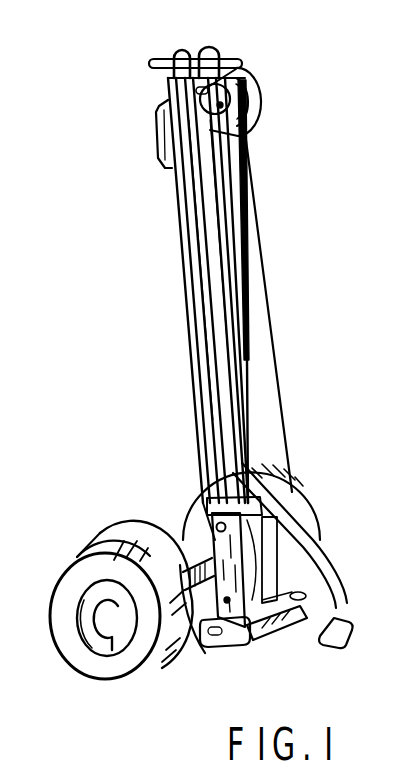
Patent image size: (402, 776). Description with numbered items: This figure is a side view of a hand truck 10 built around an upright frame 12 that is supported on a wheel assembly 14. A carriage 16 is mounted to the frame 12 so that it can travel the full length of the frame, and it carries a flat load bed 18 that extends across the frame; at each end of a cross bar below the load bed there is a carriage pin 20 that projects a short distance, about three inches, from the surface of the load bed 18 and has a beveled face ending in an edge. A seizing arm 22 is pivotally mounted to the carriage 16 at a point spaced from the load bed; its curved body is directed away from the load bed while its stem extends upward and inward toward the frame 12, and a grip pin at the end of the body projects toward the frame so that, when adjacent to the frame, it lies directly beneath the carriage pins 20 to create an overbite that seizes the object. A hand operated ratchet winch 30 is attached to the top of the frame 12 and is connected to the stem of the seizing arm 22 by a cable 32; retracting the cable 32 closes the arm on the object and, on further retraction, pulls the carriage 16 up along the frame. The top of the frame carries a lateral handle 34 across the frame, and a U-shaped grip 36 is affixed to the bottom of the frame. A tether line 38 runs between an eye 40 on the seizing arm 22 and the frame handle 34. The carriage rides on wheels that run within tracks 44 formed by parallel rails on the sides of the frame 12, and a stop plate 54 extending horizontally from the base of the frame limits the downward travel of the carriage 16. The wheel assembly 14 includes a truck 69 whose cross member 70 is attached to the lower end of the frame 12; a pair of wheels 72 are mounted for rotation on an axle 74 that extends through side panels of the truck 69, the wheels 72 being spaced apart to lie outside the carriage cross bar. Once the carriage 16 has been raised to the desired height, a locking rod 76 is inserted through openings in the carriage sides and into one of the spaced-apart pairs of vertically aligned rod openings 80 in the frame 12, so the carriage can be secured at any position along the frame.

The hand truck 10 is at (111, 319).
The frame 12 is at (180, 262).
The wheel assembly 14 is at (112, 678).
The carriage 16 is at (205, 516).
The load bed 18 is at (293, 518).
The carriage pin 20 is at (222, 632).
The seizing arm 22 is at (347, 602).
The hand operated ratchet winch 30 is at (262, 105).
The cable 32 is at (248, 358).
The lateral handle 34 is at (175, 58).
The U-shaped grip 36 is at (160, 132).
The tether line 38 is at (285, 407).
The eye 40 is at (300, 537).
The track 44 is at (382, 39).
The stop plate 54 is at (287, 633).
The truck 69 is at (101, 540).
The cross member 70 is at (185, 660).
The wheel 72 is at (140, 676).
The axle 74 is at (106, 650).
The locking rod 76 is at (190, 503).
The rod openings 80 is at (190, 335).